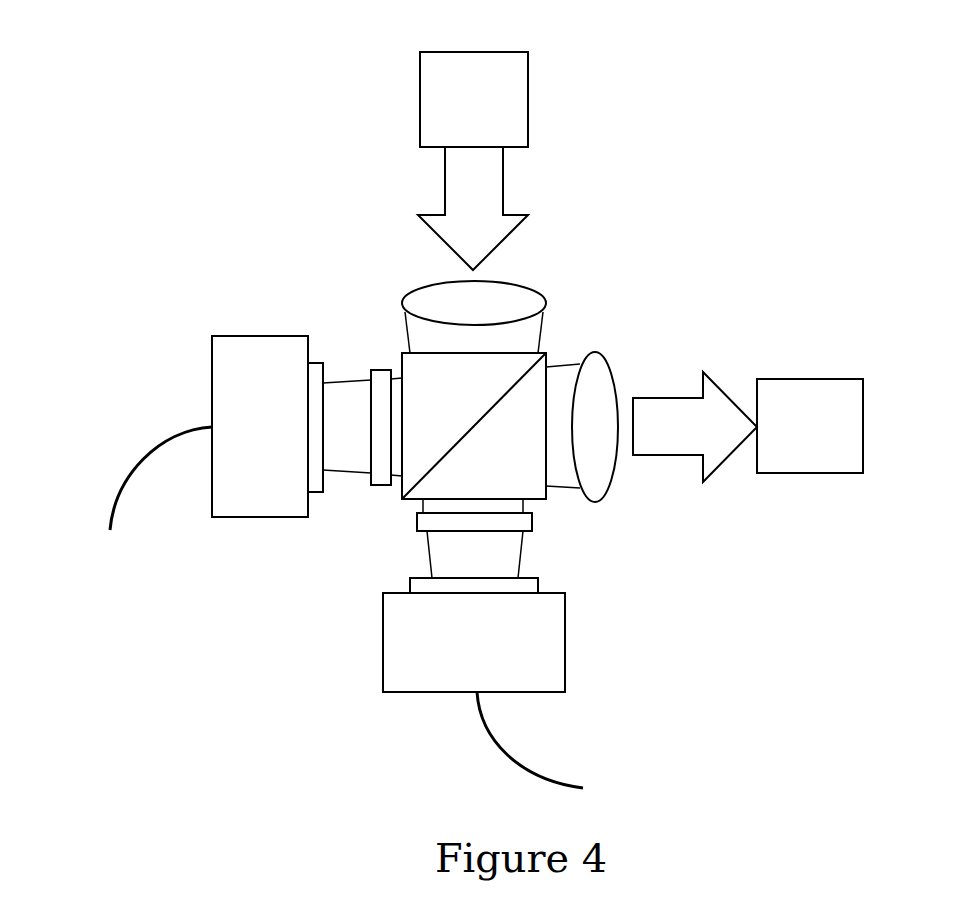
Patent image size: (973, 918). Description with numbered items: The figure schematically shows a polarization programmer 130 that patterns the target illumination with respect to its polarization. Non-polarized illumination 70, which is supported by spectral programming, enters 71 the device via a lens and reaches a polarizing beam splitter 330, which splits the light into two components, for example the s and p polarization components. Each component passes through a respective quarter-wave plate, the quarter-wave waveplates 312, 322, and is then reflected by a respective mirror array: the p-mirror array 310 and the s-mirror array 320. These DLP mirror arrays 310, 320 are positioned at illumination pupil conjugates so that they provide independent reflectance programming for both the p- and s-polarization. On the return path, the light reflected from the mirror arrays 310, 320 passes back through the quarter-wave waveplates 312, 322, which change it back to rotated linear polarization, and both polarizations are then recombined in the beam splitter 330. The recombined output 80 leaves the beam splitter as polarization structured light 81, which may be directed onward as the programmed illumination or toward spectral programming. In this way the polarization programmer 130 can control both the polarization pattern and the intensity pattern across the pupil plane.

The polarization programmer 130 is at (112, 48).
The non-polarized illumination 70 is at (420, 90).
The entry of illumination 71 is at (445, 172).
The polarizing beam splitter 330 is at (520, 352).
The p-mirror array 310 is at (268, 336).
The λ/4 waveplate 312 is at (381, 370).
The λ/4 waveplate 322 is at (417, 521).
The s-mirror array 320 is at (380, 640).
The output illumination 80 is at (818, 379).
The polarization structured light 81 is at (672, 458).